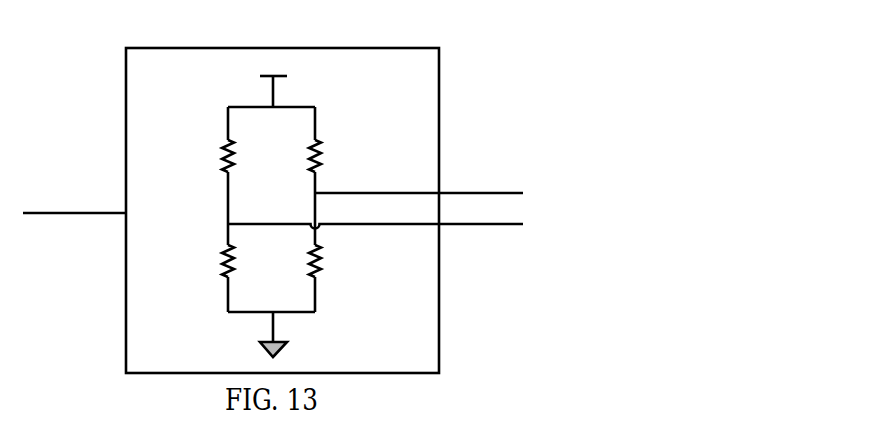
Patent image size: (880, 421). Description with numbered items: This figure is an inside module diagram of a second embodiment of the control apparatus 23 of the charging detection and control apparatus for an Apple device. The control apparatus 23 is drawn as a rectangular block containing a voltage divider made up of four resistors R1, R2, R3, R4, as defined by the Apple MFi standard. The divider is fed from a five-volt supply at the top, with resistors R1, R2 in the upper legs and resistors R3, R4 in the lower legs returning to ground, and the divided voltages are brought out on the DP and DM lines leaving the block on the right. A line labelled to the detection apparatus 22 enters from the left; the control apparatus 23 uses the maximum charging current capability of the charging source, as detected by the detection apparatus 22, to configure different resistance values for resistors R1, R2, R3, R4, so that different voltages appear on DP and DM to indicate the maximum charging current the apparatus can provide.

The control apparatus 23 is at (324, 210).
The detection apparatus 22 is at (74, 198).
The resistor R1 is at (213, 156).
The resistor R2 is at (300, 156).
The resistor R3 is at (213, 261).
The resistor R4 is at (300, 261).